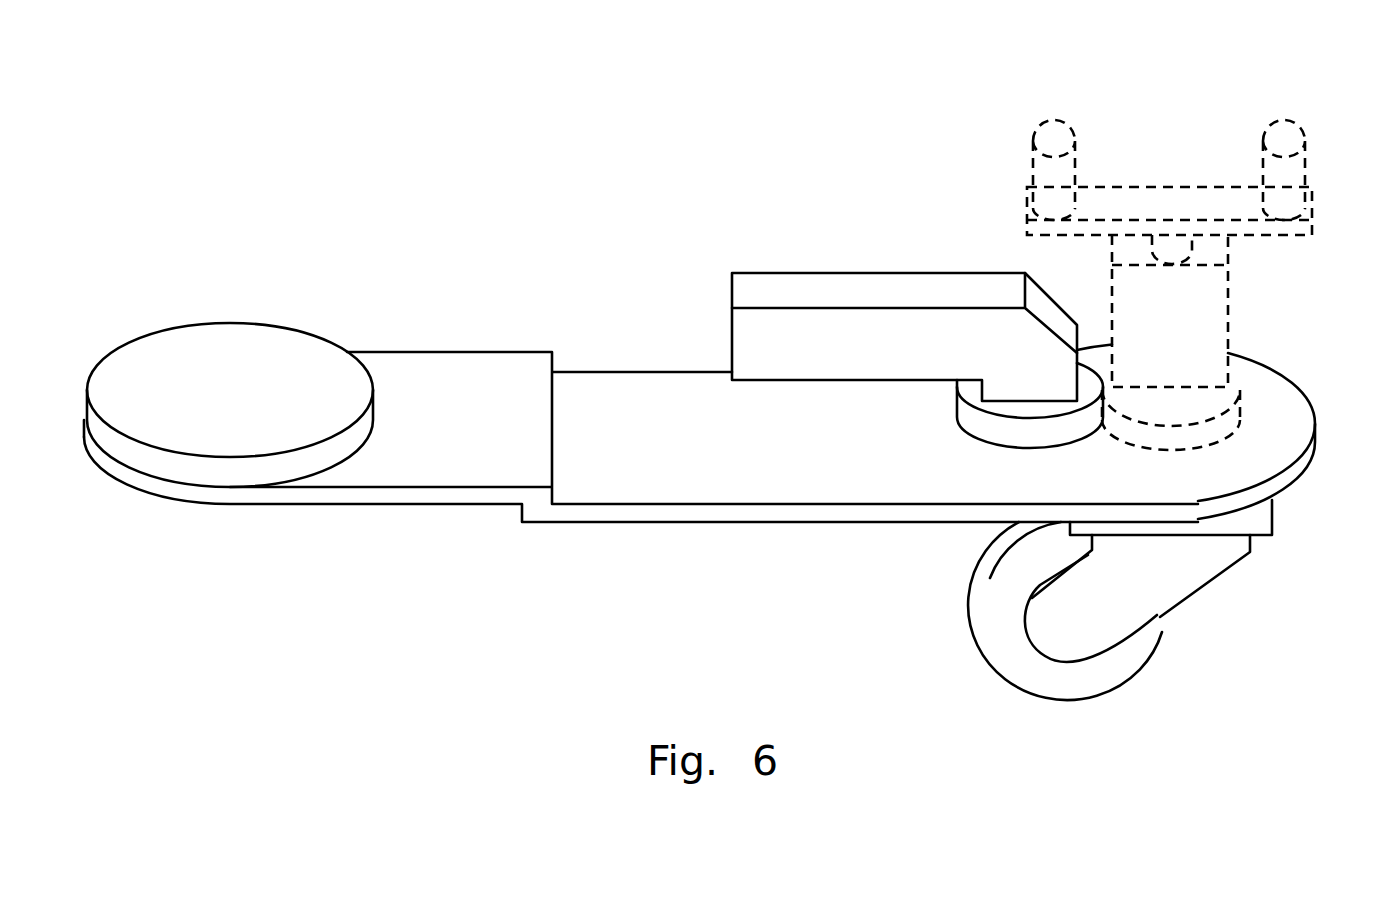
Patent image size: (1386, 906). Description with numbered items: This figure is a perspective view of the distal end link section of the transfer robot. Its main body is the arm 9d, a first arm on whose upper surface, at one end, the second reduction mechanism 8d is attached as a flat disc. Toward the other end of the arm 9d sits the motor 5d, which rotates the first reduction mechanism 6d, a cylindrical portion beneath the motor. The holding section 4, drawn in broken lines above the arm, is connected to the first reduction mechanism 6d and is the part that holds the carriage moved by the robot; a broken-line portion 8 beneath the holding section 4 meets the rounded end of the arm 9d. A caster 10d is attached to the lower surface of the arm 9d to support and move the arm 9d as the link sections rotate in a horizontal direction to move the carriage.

The holding section 4 is at (1135, 152).
The plug portion 8 is at (1240, 416).
The motor 5d is at (797, 297).
The first reduction mechanism 6d is at (978, 428).
The second reduction mechanism 8d is at (287, 358).
The arm 9d is at (632, 480).
The caster 10d is at (990, 627).